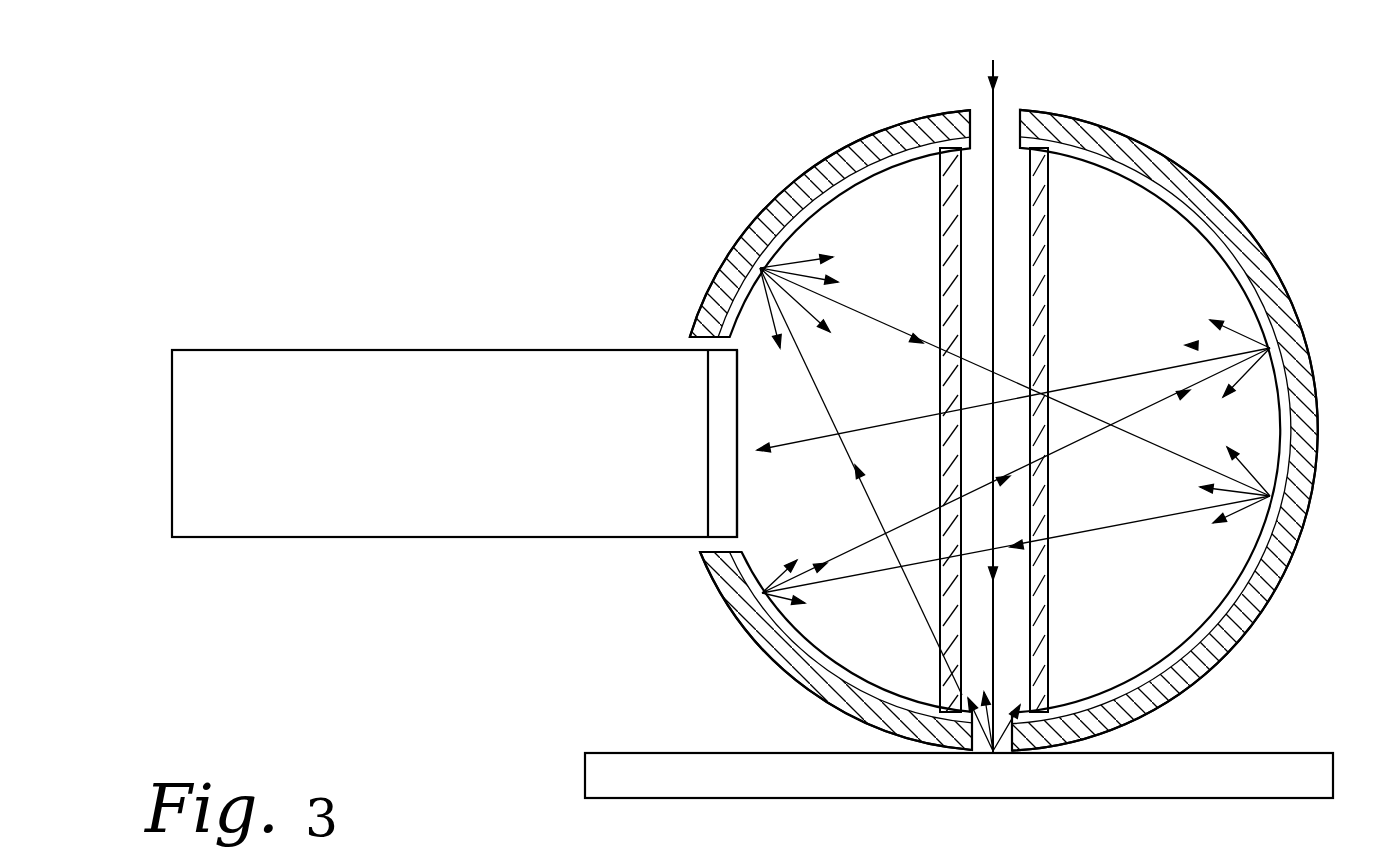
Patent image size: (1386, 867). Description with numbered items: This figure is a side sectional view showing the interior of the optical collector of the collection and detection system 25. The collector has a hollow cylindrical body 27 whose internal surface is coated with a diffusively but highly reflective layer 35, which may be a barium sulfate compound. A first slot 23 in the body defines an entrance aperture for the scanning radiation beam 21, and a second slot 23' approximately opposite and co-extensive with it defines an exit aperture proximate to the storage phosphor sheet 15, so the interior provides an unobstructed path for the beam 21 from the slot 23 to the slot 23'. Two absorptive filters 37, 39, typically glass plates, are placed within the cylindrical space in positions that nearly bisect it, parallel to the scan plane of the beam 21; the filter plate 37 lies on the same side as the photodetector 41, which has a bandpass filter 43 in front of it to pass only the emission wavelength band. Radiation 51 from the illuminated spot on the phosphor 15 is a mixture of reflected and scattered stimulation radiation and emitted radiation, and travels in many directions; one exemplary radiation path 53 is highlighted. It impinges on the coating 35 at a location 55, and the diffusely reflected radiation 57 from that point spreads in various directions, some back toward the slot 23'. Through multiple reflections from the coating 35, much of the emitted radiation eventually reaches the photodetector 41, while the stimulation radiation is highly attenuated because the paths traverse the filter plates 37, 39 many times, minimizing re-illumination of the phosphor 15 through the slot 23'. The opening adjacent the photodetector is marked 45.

The storage phosphor sheet 15 is at (1336, 778).
The scanning radiation beam 21 is at (998, 78).
The first slot 23 is at (975, 84).
The second slot 23' is at (1039, 782).
The collection and detection system 25 is at (775, 62).
The hollow cylindrical body 27 is at (1216, 212).
The diffusively reflective layer 35 is at (845, 188).
The absorptive filter 37 is at (938, 272).
The absorptive filter 39 is at (1048, 268).
The photodetector 41 is at (505, 350).
The bandpass filter 43 is at (718, 440).
The side opening 45 is at (688, 549).
The radiation 51 is at (1000, 715).
The radiation path 53 is at (860, 487).
The location 55 is at (742, 262).
The diffusely reflected radiation 57 is at (809, 313).